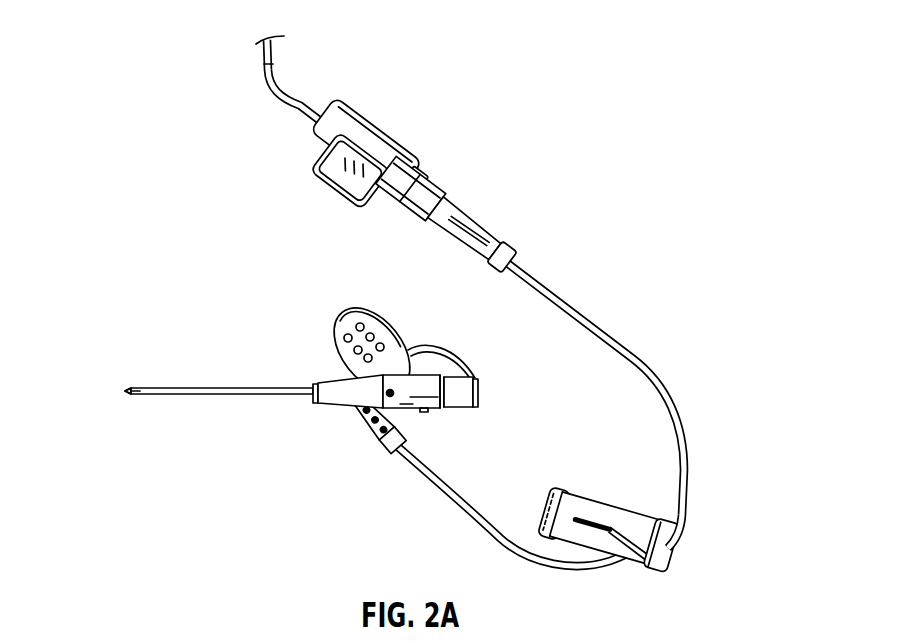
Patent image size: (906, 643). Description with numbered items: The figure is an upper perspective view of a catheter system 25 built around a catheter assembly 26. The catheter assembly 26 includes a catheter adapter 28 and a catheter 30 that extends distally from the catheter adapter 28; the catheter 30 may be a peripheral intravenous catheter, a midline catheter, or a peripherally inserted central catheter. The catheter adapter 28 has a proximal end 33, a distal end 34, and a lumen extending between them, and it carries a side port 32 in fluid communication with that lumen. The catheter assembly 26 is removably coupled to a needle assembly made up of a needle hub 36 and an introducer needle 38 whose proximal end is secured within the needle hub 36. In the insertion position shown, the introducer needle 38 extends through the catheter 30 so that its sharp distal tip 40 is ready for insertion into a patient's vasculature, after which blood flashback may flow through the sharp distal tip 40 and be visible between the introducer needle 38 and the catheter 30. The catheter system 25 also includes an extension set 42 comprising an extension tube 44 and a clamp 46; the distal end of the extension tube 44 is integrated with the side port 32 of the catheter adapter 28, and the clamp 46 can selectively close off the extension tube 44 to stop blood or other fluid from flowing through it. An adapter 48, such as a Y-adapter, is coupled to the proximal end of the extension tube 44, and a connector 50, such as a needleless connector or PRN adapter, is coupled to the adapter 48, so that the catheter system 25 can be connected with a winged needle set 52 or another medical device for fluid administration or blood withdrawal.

The catheter system 25 is at (514, 88).
The catheter assembly 26 is at (325, 317).
The catheter adapter 28 is at (428, 380).
The catheter 30 is at (240, 387).
The side port 32 is at (370, 430).
The proximal end 33 is at (441, 410).
The distal end 34 is at (318, 382).
The needle hub 36 is at (472, 395).
The introducer needle 38 is at (128, 390).
The sharp distal tip 40 is at (124, 392).
The extension set 42 is at (496, 536).
The extension tube 44 is at (572, 316).
The clamp 46 is at (682, 548).
The adapter 48 is at (464, 228).
The connector 50 is at (363, 122).
The winged needle set 52 is at (322, 183).